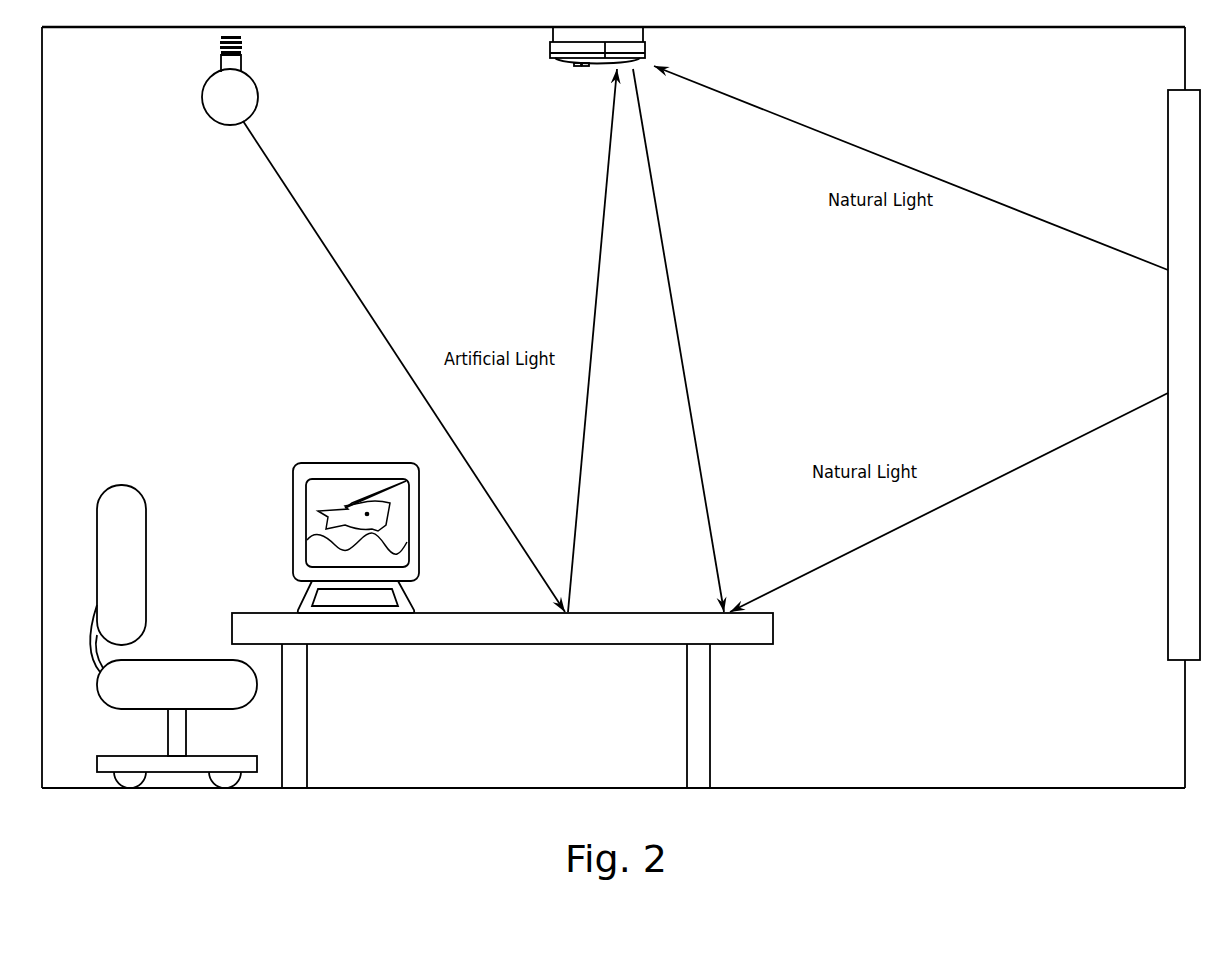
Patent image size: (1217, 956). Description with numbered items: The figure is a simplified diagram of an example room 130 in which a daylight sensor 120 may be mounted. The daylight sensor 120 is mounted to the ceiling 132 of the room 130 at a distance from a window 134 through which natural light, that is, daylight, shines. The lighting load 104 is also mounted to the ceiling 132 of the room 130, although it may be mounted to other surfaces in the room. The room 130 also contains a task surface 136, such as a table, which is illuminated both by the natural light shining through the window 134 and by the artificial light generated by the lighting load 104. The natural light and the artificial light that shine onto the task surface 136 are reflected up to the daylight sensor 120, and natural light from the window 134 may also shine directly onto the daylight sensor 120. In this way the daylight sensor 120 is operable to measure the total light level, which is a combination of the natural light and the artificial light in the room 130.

The lighting load 104 is at (240, 90).
The daylight sensor 120 is at (597, 33).
The room 130 is at (1010, 637).
The ceiling 132 is at (850, 28).
The window 134 is at (1168, 174).
The task surface 136 is at (642, 613).